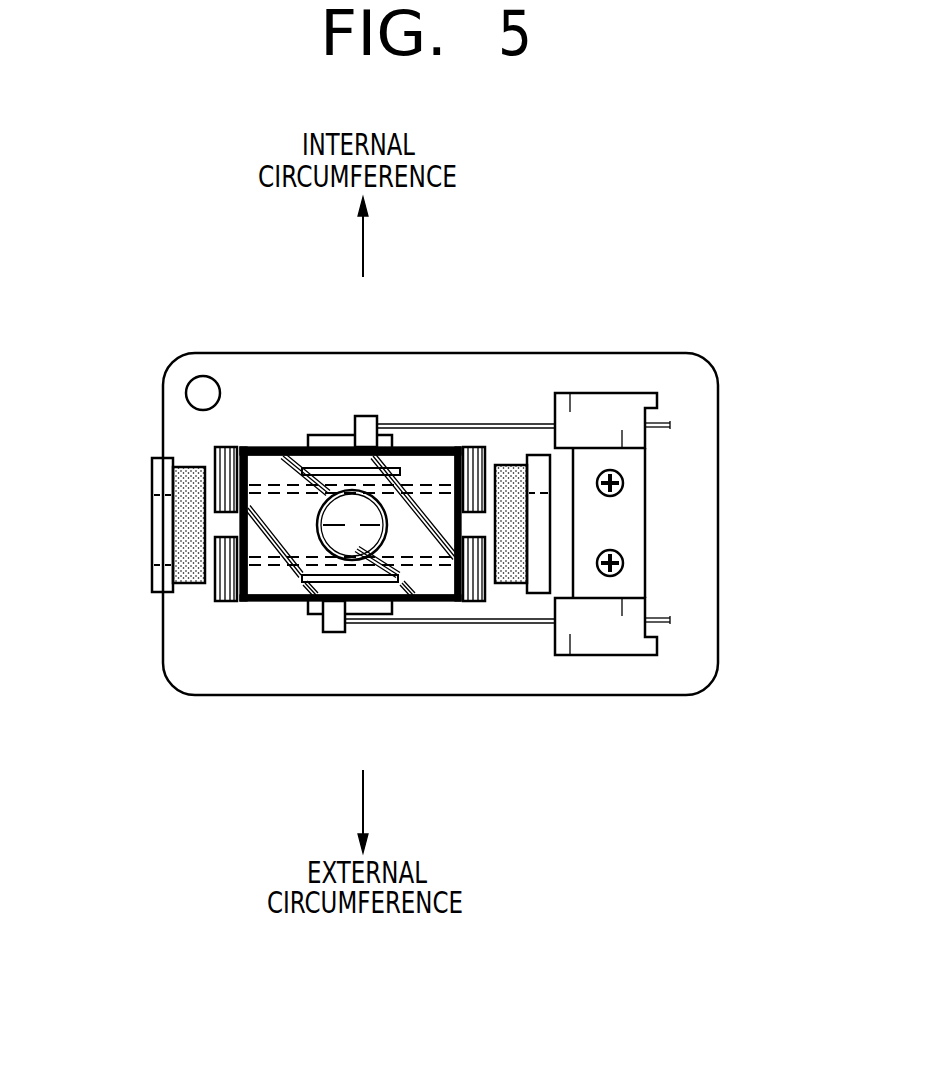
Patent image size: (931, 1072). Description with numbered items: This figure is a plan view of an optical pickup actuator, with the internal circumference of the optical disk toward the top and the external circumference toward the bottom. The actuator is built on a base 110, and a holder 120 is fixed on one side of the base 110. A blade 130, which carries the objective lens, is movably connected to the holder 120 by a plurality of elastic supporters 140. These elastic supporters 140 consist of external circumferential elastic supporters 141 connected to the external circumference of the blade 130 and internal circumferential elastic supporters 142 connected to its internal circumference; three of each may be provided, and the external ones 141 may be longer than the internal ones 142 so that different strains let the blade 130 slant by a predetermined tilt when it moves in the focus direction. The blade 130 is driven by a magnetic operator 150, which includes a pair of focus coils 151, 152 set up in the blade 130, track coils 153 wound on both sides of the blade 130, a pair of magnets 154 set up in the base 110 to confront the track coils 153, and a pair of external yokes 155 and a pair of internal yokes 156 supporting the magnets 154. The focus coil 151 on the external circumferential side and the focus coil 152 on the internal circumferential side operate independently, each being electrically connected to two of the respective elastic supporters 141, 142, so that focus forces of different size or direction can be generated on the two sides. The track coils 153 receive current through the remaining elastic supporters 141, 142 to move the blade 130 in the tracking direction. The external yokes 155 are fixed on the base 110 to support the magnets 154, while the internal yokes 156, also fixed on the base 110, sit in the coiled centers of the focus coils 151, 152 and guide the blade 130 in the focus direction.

The base 110 is at (176, 359).
The holder 120 is at (643, 525).
The blade 130 is at (257, 468).
The elastic supporters 140 is at (450, 519).
The external circumferential elastic supporters 141 is at (408, 624).
The internal circumferential elastic supporters 142 is at (398, 424).
The magnetic operator 150 is at (305, 470).
The focus coil 151 is at (250, 602).
The focus coil 152 is at (257, 453).
The track coils 153 is at (215, 598).
The magnets 154 is at (185, 550).
The external yokes 155 is at (160, 513).
The internal yokes 156 is at (326, 468).